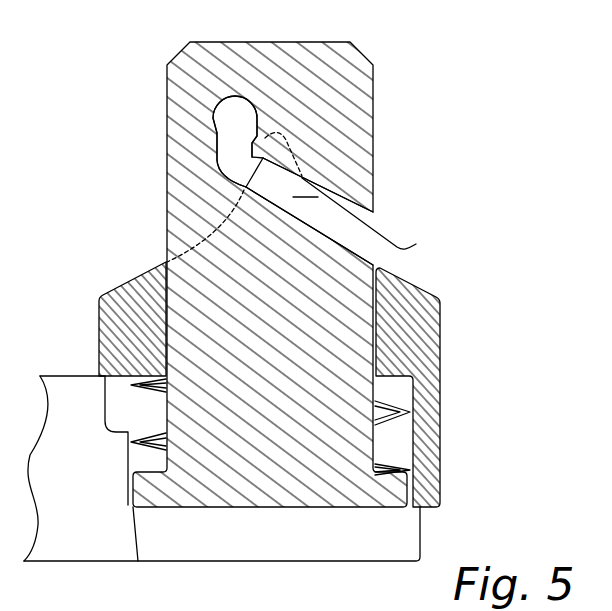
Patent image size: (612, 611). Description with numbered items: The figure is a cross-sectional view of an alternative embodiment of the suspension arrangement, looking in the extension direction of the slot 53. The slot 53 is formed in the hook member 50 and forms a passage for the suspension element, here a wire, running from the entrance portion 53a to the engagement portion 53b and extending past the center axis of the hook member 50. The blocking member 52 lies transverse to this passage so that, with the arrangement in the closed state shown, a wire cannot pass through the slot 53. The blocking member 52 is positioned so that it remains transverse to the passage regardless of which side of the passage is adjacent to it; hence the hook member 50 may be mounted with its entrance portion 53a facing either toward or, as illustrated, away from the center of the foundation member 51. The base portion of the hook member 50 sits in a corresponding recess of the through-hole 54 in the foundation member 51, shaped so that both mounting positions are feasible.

The hook member 50 is at (183, 198).
The foundation member 51 is at (438, 302).
The blocking member 52 is at (347, 211).
The slot 53 is at (243, 156).
The entrance portion 53a is at (381, 214).
The engagement portion 53b is at (223, 113).
The through-hole 54 is at (397, 388).